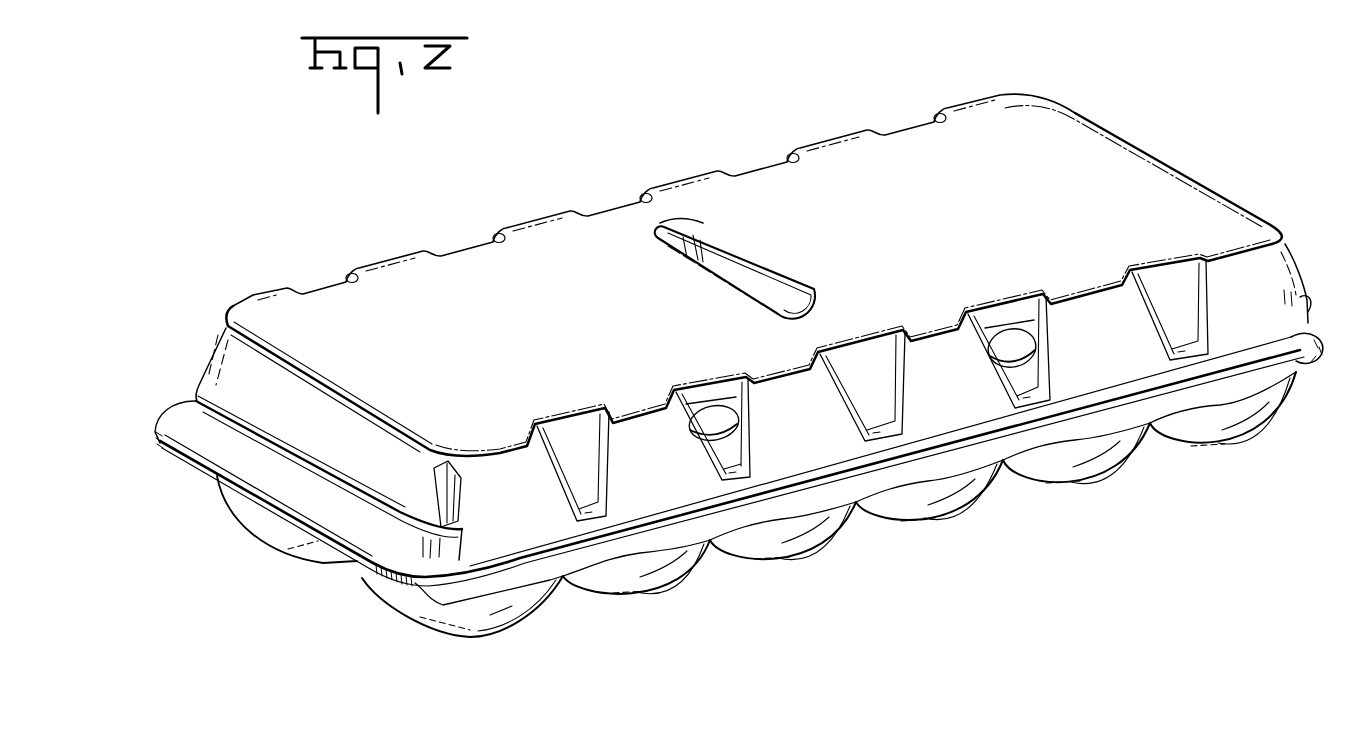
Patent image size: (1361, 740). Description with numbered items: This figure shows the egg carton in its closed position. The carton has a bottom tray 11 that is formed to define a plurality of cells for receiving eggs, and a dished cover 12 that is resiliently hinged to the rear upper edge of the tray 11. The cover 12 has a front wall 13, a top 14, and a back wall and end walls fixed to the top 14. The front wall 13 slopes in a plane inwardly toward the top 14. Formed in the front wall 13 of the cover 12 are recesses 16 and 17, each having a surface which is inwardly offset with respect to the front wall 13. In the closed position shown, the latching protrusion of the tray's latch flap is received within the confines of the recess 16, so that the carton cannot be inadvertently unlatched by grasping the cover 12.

The bottom tray 11 is at (1278, 414).
The dished cover 12 is at (1296, 278).
The front wall 13 is at (812, 446).
The top 14 is at (847, 271).
The recess 16 is at (715, 386).
The recess 17 is at (1020, 324).